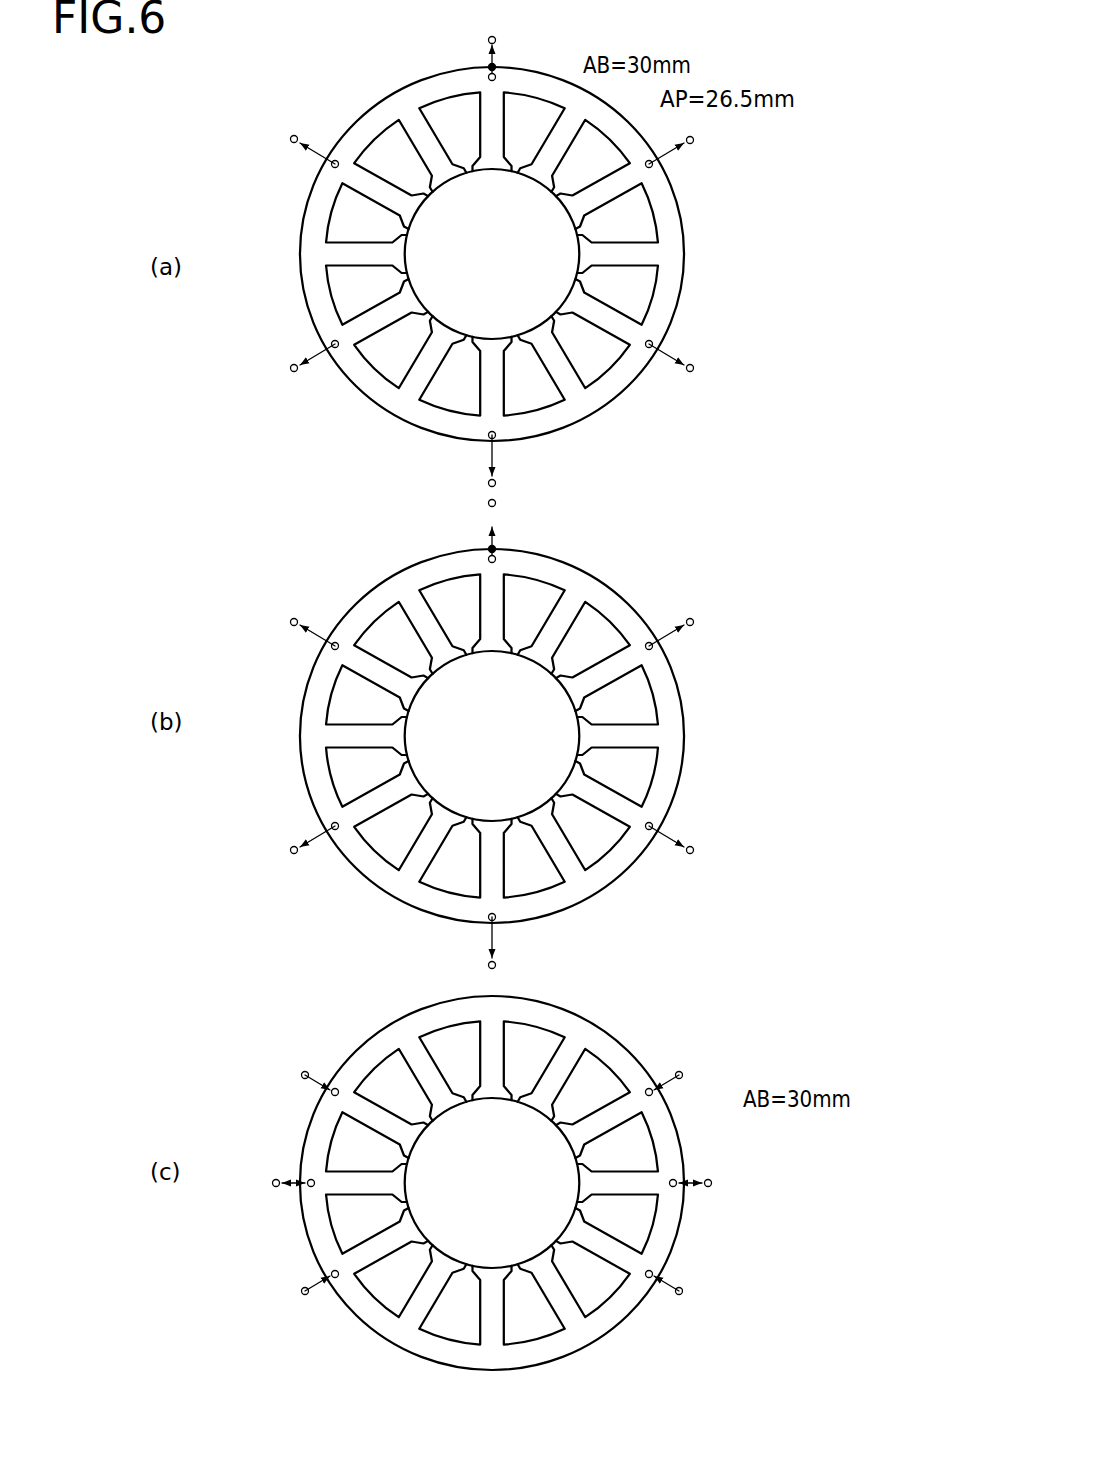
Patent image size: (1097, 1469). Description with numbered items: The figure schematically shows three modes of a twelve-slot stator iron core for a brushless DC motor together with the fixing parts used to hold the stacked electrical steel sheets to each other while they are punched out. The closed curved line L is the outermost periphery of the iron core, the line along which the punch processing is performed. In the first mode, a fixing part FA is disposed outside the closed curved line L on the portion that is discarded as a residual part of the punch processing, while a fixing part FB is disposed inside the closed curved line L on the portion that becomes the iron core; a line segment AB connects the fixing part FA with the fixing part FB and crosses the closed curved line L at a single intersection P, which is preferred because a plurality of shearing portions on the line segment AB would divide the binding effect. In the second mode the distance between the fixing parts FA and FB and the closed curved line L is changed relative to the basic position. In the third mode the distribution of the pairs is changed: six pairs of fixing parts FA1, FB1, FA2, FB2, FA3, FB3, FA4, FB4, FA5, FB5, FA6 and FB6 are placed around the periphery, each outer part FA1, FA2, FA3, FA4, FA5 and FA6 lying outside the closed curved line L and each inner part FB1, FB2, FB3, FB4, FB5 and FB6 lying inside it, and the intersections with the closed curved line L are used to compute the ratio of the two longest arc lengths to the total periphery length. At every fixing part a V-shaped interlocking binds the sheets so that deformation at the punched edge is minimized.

The closed curved line L is at (630, 385).
The intersection P is at (494, 66).
The line segment AB is at (488, 58).
The fixing part FA is at (488, 40).
The fixing part FB is at (489, 78).
The fixing part FA1 is at (684, 1076).
The fixing part FB1 is at (651, 1096).
The fixing part FA2 is at (712, 1183).
The fixing part FB2 is at (674, 1187).
The fixing part FA3 is at (683, 1292).
The fixing part FB3 is at (652, 1271).
The fixing part FA4 is at (303, 1295).
The fixing part FB4 is at (335, 1278).
The fixing part FA5 is at (272, 1183).
The fixing part FB5 is at (310, 1187).
The fixing part FA6 is at (301, 1075).
The fixing part FB6 is at (332, 1093).